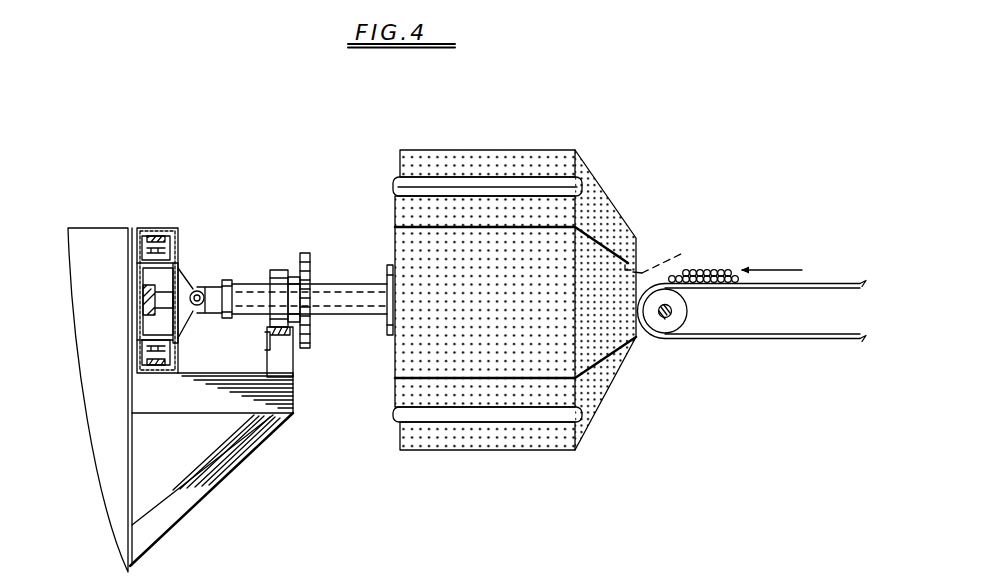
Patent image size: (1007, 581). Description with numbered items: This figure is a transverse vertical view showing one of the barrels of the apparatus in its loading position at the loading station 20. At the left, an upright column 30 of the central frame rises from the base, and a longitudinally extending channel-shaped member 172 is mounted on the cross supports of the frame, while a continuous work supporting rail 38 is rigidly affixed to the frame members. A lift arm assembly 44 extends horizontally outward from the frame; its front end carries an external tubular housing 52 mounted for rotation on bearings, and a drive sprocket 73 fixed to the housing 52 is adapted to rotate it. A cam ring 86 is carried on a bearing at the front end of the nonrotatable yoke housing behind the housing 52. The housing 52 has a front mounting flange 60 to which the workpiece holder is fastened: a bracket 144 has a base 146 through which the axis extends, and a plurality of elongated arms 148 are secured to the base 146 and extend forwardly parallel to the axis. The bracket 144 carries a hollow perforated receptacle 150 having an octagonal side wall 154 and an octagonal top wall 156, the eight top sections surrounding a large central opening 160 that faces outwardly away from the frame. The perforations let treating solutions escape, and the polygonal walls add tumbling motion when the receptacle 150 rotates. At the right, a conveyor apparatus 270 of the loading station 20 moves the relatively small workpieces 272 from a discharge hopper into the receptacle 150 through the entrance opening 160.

The upright column 30 is at (98, 250).
The channel-shaped member 172 is at (167, 225).
The cam ring 86 is at (228, 280).
The external tubular housing 52 is at (368, 312).
The lift arm assembly 44 is at (276, 268).
The work supporting rail 38 is at (267, 335).
The drive sprocket 73 is at (305, 253).
The front mounting flange 60 is at (386, 270).
The base 146 is at (394, 222).
The elongated arms 148 is at (467, 187).
The side wall 154 is at (550, 160).
The bracket 144 is at (482, 425).
The top wall 156 is at (612, 228).
The receptacle 150 is at (607, 412).
The opening 160 is at (671, 255).
The loading station 20 is at (772, 213).
The conveyor apparatus 270 is at (753, 340).
The articles 272 is at (713, 268).